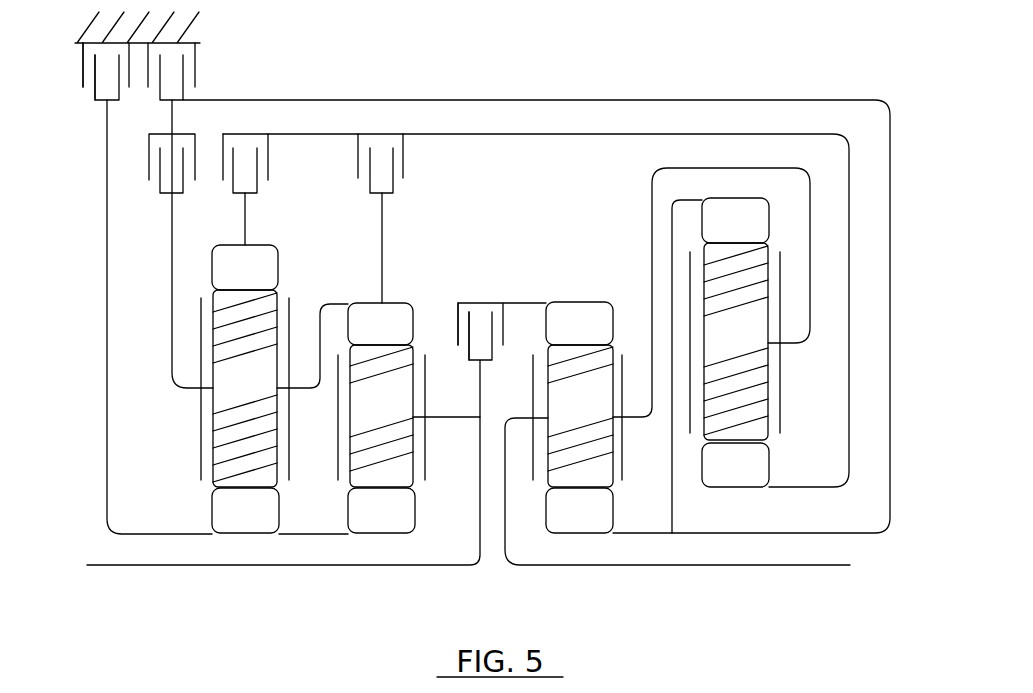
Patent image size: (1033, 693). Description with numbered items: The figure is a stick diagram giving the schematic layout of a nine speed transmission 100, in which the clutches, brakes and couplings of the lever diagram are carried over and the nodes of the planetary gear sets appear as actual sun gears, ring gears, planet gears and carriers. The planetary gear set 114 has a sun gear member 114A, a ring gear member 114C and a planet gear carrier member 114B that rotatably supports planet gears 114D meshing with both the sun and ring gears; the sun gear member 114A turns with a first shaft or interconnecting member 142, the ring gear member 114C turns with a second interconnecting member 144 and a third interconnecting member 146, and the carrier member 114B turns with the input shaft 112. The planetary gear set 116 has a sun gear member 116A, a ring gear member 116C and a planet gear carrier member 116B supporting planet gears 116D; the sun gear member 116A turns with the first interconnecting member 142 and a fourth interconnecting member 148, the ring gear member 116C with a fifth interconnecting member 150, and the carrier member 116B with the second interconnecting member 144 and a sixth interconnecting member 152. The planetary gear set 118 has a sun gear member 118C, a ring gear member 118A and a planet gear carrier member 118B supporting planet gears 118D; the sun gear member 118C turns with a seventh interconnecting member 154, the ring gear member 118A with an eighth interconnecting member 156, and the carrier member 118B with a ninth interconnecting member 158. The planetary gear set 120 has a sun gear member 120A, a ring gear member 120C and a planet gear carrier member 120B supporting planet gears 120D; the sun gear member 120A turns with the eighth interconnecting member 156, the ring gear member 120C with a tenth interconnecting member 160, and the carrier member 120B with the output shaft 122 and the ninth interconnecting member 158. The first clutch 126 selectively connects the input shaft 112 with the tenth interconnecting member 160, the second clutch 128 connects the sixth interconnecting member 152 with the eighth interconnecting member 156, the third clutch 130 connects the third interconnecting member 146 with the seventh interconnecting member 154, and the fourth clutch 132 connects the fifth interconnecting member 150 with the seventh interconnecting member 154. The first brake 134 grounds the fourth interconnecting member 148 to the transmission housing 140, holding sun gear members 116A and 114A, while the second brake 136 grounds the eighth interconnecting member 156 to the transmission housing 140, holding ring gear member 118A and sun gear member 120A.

The nine speed transmission 100 is at (742, 70).
The input shaft 112 is at (157, 565).
The planetary gear set 114 is at (405, 469).
The sun gear member 114A is at (358, 521).
The planet gear carrier member 114B is at (428, 470).
The ring gear member 114C is at (403, 335).
The planet gears 114D is at (381, 416).
The planetary gear set 116 is at (271, 440).
The sun gear member 116A is at (222, 521).
The planet gear carrier member 116B is at (292, 305).
The ring gear member 116C is at (222, 278).
The planet gears 116D is at (245, 388).
The planetary gear set 118 is at (755, 416).
The ring gear member 118A is at (712, 231).
The planet gear carrier member 118B is at (781, 412).
The sun gear member 118C is at (712, 476).
The planet gears 118D is at (736, 341).
The planetary gear set 120 is at (641, 470).
The sun gear member 120A is at (556, 521).
The planet gear carrier member 120B is at (624, 472).
The ring gear member 120C is at (556, 335).
The planet gears 120D is at (580, 416).
The output shaft 122 is at (665, 565).
The first clutch 126 is at (458, 312).
The second clutch 128 is at (149, 160).
The third clutch 130 is at (403, 163).
The fourth clutch 132 is at (268, 163).
The first brake 134 is at (83, 72).
The second brake 136 is at (196, 68).
The transmission housing 140 is at (196, 48).
The first shaft or interconnecting member 142 is at (303, 537).
The second shaft or interconnecting member 144 is at (330, 360).
The third shaft or interconnecting member 146 is at (385, 208).
The fourth shaft or interconnecting member 148 is at (107, 355).
The fifth shaft or interconnecting member 150 is at (248, 208).
The sixth shaft or interconnecting member 152 is at (172, 293).
The seventh shaft or interconnecting member 154 is at (601, 136).
The eighth shaft or interconnecting member 156 is at (573, 100).
The ninth shaft or interconnecting member 158 is at (652, 233).
The tenth shaft or interconnecting member 160 is at (515, 303).